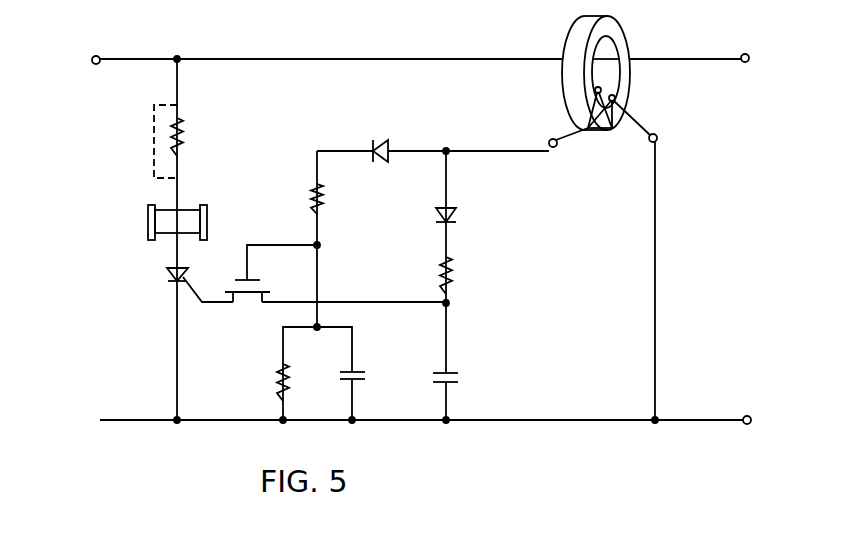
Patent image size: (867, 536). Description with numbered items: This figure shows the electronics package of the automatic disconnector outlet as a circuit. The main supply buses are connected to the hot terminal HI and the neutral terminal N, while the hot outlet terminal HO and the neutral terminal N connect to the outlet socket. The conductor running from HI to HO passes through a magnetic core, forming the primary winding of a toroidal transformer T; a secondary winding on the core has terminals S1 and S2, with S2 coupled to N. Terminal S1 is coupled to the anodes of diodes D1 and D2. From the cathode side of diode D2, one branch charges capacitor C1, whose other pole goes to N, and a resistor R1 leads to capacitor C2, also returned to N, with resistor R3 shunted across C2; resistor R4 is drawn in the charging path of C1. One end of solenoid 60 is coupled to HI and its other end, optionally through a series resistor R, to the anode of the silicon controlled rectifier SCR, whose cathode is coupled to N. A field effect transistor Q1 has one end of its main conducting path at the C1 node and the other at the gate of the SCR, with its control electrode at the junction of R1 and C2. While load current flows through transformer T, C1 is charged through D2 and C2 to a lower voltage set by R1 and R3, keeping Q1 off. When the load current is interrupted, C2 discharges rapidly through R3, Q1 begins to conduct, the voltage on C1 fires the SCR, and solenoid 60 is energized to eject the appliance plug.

The hot supply terminal HI is at (92, 60).
The hot outlet terminal HO is at (749, 57).
The neutral terminal N is at (751, 420).
The series resistor R is at (181, 135).
The solenoid 60 is at (203, 205).
The silicon controlled rectifier SCR is at (165, 269).
The field effect transistor Q1 is at (247, 303).
The resistor R1 is at (320, 212).
The diode D1 is at (407, 121).
The rectifier diode D2 is at (452, 208).
The resistor R4 is at (450, 277).
The capacitor C1 is at (452, 368).
The capacitor C2 is at (363, 382).
The resistor R3 is at (280, 370).
The toroidal transformer T is at (631, 92).
The secondary winding terminal S1 is at (557, 148).
The secondary winding terminal S2 is at (659, 136).